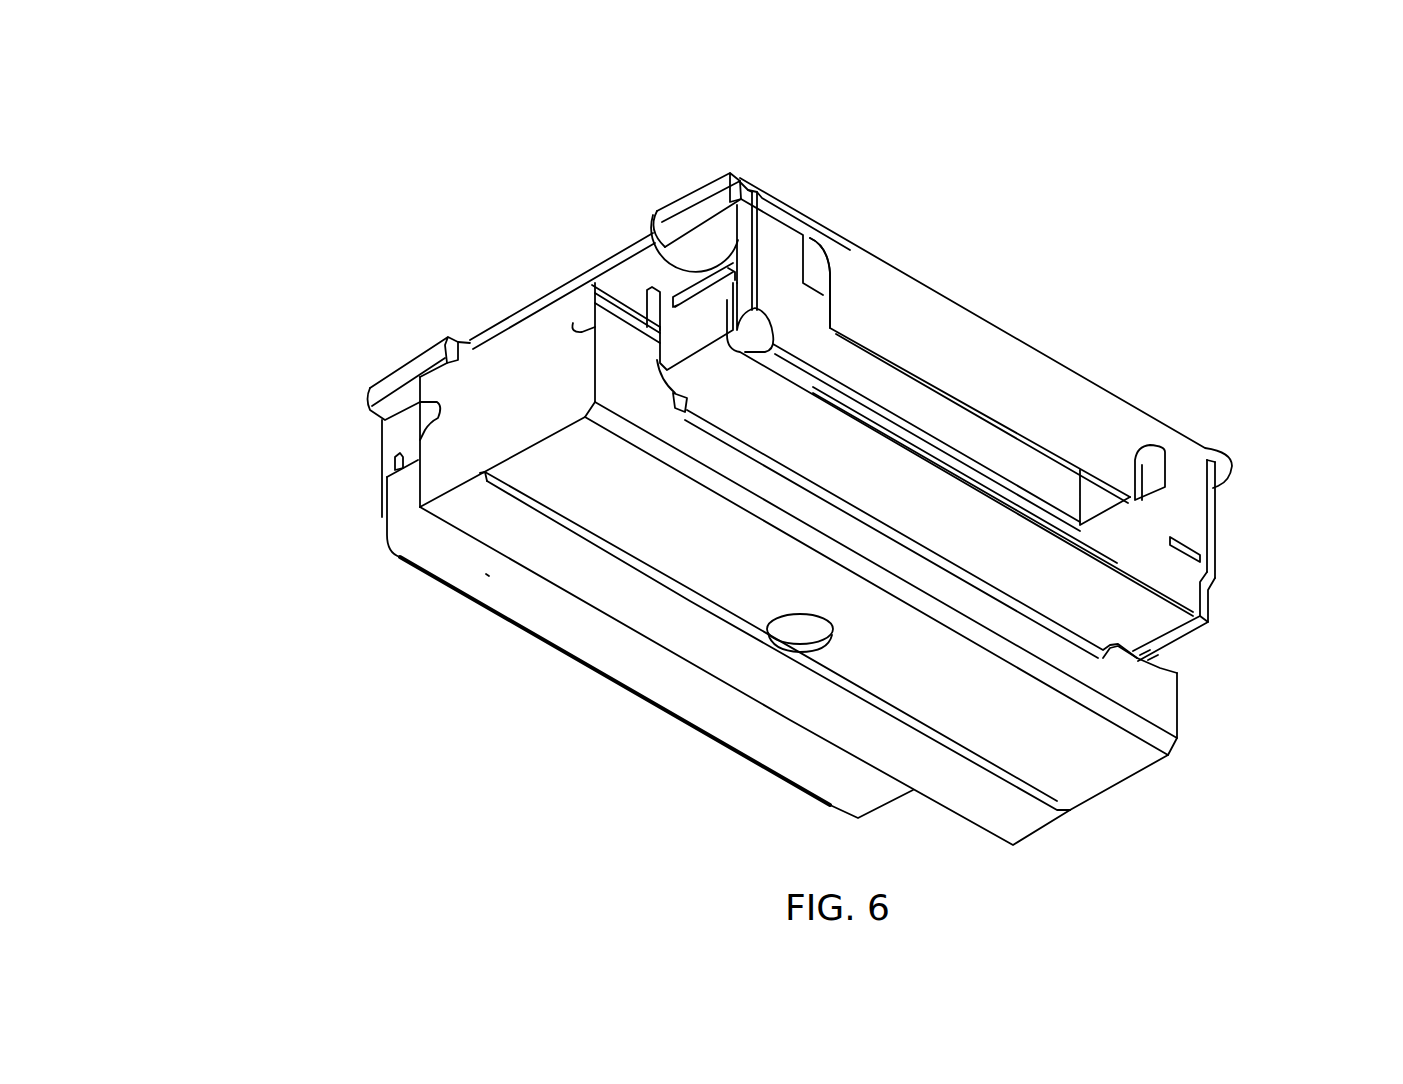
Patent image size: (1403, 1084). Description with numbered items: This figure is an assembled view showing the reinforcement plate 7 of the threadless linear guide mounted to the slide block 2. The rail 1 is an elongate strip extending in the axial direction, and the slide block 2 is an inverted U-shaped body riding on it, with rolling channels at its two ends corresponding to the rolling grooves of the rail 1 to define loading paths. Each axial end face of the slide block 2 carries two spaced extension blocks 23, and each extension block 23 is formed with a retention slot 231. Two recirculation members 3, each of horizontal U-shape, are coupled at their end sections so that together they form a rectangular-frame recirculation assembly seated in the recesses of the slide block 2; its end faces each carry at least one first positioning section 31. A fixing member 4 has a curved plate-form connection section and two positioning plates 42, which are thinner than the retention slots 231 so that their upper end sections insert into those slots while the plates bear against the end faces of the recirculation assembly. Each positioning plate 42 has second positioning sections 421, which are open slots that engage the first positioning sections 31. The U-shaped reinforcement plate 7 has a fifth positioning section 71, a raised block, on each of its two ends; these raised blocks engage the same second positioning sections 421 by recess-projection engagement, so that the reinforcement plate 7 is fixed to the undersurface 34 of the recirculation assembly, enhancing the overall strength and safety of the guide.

The rail 1 is at (650, 600).
The slide block 2 is at (987, 370).
The recirculation member 3 is at (860, 367).
The fixing member 4 is at (1240, 475).
The reinforcement plate 7 is at (1120, 615).
The extension block 23 is at (419, 360).
The first positioning section 31 is at (733, 296).
The undersurface 34 is at (1207, 578).
The positioning plate 42 is at (403, 447).
The fifth positioning section 71 is at (733, 275).
The retention slot 231 is at (757, 195).
The second positioning section 421 is at (656, 247).